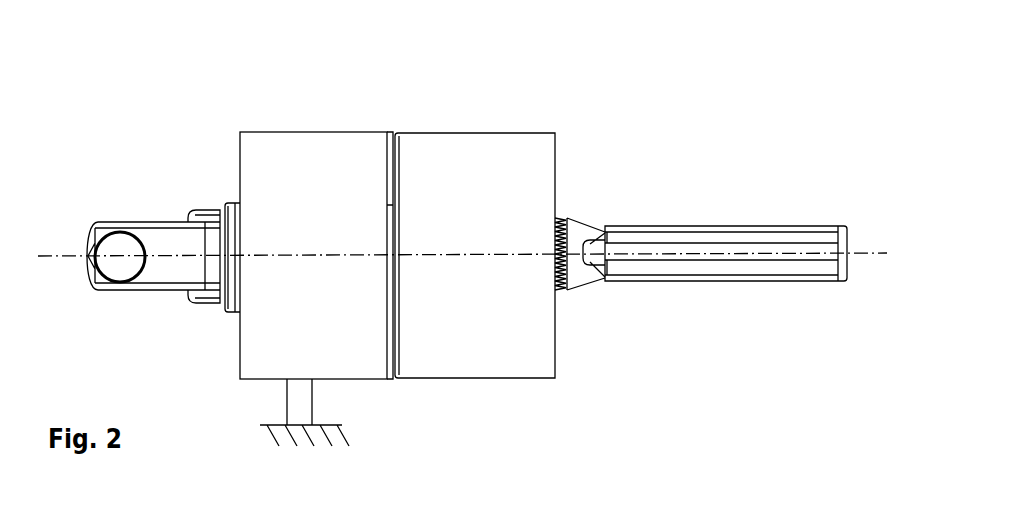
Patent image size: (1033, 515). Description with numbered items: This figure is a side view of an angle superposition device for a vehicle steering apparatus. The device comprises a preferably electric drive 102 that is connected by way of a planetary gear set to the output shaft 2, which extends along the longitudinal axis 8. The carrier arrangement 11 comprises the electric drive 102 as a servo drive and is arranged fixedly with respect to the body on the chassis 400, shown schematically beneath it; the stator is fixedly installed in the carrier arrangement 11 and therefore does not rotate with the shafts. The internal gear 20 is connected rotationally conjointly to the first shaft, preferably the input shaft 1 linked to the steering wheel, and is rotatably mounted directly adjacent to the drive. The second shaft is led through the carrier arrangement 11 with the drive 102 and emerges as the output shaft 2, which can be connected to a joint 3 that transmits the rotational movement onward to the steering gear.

The input shaft 1 is at (748, 238).
The output shaft 2 is at (228, 228).
The joint 3 is at (120, 226).
The longitudinal axis 8 is at (59, 253).
The carrier arrangement 11 is at (368, 132).
The internal gear 20 is at (487, 160).
The electric drive 102 is at (330, 160).
The chassis 400 is at (292, 457).